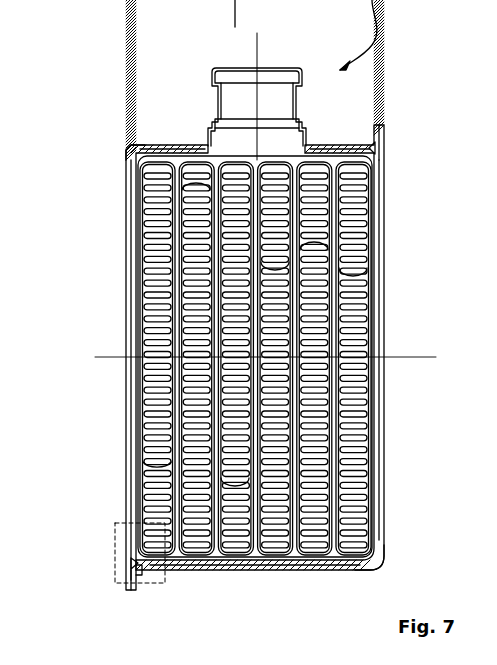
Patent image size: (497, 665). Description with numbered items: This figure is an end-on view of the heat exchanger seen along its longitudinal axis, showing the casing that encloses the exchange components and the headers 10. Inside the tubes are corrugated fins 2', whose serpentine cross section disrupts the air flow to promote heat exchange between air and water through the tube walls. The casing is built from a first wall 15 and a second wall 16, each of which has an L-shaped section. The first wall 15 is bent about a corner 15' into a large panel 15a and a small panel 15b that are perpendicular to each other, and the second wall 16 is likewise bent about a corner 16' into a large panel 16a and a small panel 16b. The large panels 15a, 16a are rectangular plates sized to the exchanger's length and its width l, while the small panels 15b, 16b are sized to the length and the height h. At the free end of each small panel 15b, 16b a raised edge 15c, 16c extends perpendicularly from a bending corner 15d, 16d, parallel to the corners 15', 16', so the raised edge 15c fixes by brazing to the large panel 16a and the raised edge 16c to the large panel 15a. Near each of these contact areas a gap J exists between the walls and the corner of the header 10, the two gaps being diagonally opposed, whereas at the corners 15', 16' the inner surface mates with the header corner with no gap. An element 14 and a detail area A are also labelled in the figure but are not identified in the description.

The first wall 15 is at (217, 295).
The bending corner 15' is at (122, 120).
The large panel 15a is at (130, 266).
The small panel 15b is at (178, 147).
The raised edge 15c is at (370, 138).
The bending corner 15d is at (368, 143).
The second wall 16 is at (292, 356).
The bending corner 16' is at (395, 554).
The large panel 16a is at (386, 257).
The small panel 16b is at (330, 572).
The raised edge 16c is at (143, 590).
The bending corner 16d is at (146, 573).
The header 10 is at (141, 440).
The cell element 14 is at (236, 496).
The fin 2' is at (372, 358).
The gap J is at (377, 150).
The detail region A is at (113, 540).
The height h is at (101, 356).
The width l is at (255, 48).